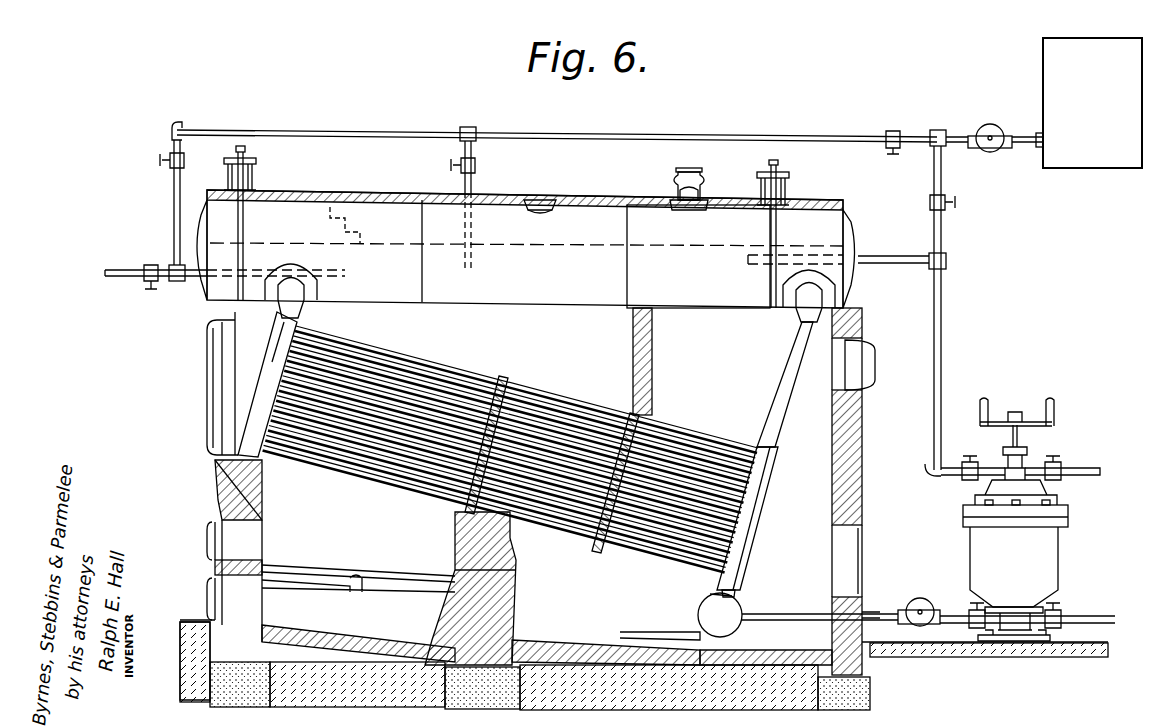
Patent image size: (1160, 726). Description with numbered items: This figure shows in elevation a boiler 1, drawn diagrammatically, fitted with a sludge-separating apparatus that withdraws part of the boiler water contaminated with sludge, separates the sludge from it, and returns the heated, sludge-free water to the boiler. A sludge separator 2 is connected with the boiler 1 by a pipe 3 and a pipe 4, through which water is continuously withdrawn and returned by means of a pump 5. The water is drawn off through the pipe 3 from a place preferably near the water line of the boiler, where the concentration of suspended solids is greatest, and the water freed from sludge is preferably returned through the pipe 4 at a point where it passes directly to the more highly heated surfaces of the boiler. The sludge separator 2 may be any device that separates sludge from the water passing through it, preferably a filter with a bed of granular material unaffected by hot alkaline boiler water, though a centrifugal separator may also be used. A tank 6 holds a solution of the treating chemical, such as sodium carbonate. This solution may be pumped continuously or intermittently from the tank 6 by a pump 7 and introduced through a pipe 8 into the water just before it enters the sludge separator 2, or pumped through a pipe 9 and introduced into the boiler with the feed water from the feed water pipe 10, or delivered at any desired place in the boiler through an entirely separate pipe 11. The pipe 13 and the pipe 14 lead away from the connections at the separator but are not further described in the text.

The boiler 1 is at (465, 301).
The sludge separator 2 is at (1058, 553).
The pipe 3 is at (952, 478).
The pipe 4 is at (788, 611).
The pump 5 is at (921, 601).
The tank 6 is at (1092, 103).
The pump 7 is at (990, 128).
The pipe 8 is at (942, 230).
The pipe 9 is at (515, 136).
The feed water pipe 10 is at (133, 275).
The separate pipe 11 is at (475, 183).
The pipe 13 is at (1112, 625).
The pipe 14 is at (1102, 475).